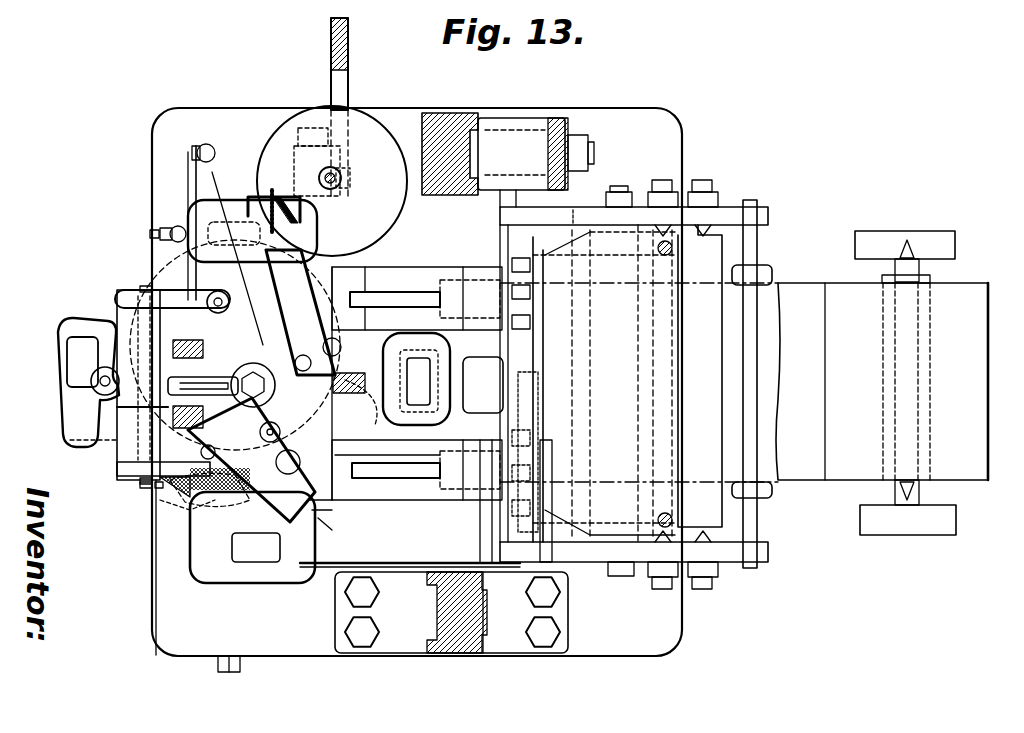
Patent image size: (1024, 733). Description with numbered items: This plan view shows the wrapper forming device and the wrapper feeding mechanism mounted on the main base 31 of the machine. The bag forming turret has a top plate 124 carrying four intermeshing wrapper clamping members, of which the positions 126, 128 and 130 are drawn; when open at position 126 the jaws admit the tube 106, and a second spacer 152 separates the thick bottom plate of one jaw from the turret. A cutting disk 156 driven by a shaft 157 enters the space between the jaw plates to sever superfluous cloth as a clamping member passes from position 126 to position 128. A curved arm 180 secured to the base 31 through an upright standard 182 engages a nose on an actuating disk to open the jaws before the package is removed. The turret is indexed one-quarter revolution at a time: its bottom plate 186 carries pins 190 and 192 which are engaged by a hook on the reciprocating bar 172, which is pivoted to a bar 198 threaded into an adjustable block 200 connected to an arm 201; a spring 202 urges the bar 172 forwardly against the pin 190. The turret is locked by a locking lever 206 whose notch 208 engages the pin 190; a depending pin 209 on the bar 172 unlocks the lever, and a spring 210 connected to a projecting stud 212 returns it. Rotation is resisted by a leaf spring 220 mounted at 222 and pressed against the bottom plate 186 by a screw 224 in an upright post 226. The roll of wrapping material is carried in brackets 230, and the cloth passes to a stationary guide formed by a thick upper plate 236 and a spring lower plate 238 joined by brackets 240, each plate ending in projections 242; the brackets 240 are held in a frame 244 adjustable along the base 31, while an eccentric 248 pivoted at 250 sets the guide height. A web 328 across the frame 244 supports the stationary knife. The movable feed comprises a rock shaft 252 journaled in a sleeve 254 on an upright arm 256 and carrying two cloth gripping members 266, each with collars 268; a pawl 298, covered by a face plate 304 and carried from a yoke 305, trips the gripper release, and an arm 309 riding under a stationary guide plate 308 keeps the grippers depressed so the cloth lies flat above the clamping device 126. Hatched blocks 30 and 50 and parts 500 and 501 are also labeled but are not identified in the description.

The supporting block 30 is at (455, 120).
The main base 31 is at (630, 648).
The lower supporting block 50 is at (455, 640).
The tube 106 is at (436, 370).
The top plate 124 is at (200, 292).
The wrapper clamping member 126 is at (455, 412).
The wrapper clamping member 128 is at (224, 188).
The wrapper clamping member 130 is at (60, 418).
The second spacer 152 is at (268, 592).
The cutting disk 156 is at (368, 130).
The shaft 157 is at (341, 175).
The reciprocating bar 172 is at (322, 512).
The curved arm 180 is at (175, 508).
The upright standard 182 is at (332, 530).
The bottom plate 186 is at (190, 296).
The pin 190 is at (300, 420).
The pin 192 is at (246, 448).
The bar 198 is at (325, 218).
The adjustable block 200 is at (304, 166).
The arm 201 is at (331, 58).
The spring 202 is at (268, 192).
The locking lever 206 is at (322, 500).
The notch 208 is at (387, 453).
The depending pin 209 is at (156, 486).
The spring 210 is at (207, 480).
The projecting stud 212 is at (240, 480).
The leaf spring 220 is at (186, 184).
The leaf spring mounting 222 is at (207, 144).
The screw 224 is at (160, 230).
The upright post 226 is at (156, 238).
The brackets 230 is at (956, 246).
The thick upper plate 236 is at (637, 207).
The spring lower plate 238 is at (585, 225).
The brackets 240 is at (674, 254).
The projections 242 is at (512, 290).
The frame 244 is at (738, 562).
The eccentric 248 is at (598, 207).
The eccentric pivot 250 is at (612, 190).
The rock shaft 252 is at (758, 242).
The sleeve 254 is at (372, 420).
The upright arm 256 is at (370, 375).
The cloth gripping members 266 is at (414, 272).
The collars 268 is at (352, 280).
The pawl 298 is at (150, 288).
The face plate 304 is at (118, 290).
The yoke 305 is at (222, 370).
The stationary guide plate 308 is at (378, 566).
The arm 309 is at (540, 530).
The web 328 is at (525, 418).
The pivot stud 500 is at (122, 456).
The spring 501 is at (78, 441).